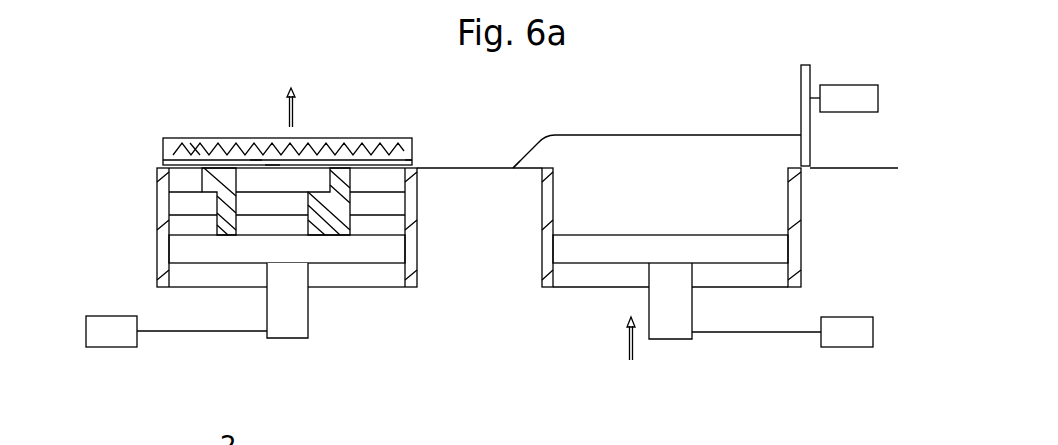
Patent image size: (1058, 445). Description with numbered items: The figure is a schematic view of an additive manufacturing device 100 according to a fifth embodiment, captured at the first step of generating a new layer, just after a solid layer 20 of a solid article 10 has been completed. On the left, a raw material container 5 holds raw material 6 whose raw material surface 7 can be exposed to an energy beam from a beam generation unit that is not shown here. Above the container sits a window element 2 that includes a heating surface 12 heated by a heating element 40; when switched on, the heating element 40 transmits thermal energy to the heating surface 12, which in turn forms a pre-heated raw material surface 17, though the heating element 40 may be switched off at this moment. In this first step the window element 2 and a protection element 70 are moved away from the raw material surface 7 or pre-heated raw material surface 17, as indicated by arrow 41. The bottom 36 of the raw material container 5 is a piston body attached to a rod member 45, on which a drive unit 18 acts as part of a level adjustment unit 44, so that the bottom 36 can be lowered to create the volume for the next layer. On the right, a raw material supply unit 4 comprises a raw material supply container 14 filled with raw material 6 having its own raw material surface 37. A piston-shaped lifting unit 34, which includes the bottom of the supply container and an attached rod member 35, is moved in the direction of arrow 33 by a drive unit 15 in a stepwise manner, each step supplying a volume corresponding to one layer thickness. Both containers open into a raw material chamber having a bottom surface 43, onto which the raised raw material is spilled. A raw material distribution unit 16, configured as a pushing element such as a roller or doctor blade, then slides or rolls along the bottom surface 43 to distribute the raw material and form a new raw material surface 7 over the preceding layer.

The additive manufacturing device 100 is at (115, 80).
The window element 2 is at (388, 125).
The raw material supply unit 4 is at (763, 62).
The raw material container 5 is at (165, 257).
The raw material 6 is at (177, 183).
The raw material surface 7 is at (258, 167).
The solid article 10 is at (332, 216).
The heating surface 12 is at (332, 143).
The raw material supply container 14 is at (801, 213).
The drive unit 15 is at (840, 340).
The raw material distribution unit 16 is at (840, 97).
The pre-heated raw material surface 17 is at (272, 167).
The drive unit 18 is at (116, 338).
The solid layer 20 is at (217, 182).
The arrow 33 is at (633, 348).
The lifting unit 34 is at (685, 310).
The rod member 35 is at (660, 309).
The bottom 36 is at (370, 236).
The raw material surface 37 is at (716, 135).
The heating element 40 is at (197, 147).
The arrow 41 is at (293, 115).
The bottom surface 43 is at (515, 168).
The level adjustment unit 44 is at (292, 293).
The rod member 45 is at (294, 313).
The protection element 70 is at (412, 157).